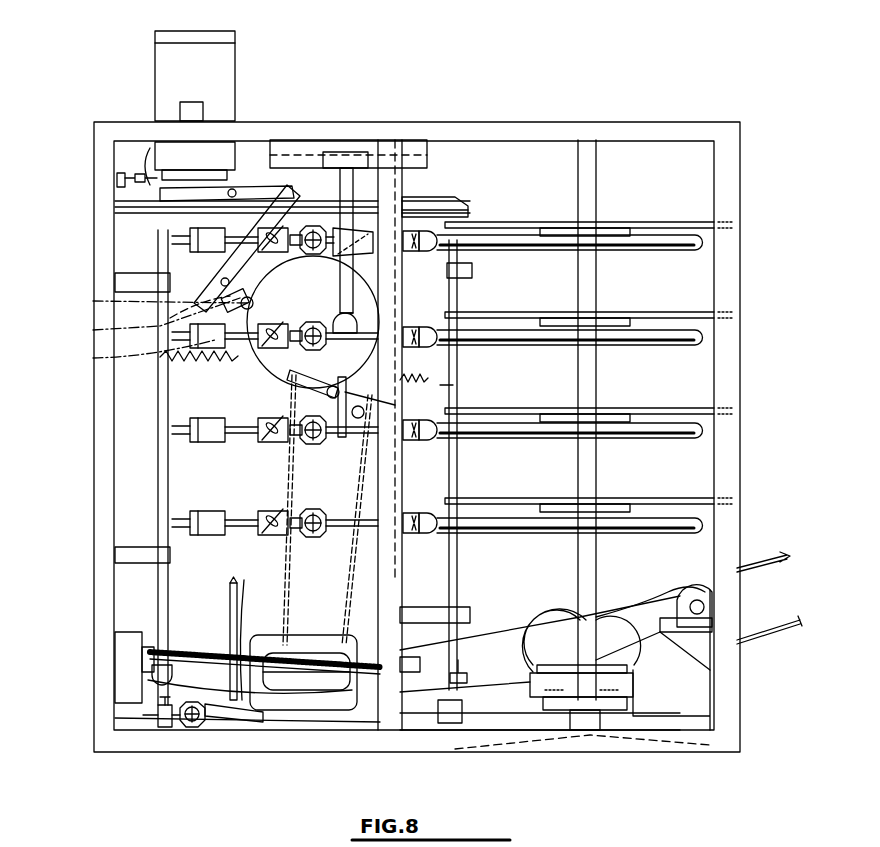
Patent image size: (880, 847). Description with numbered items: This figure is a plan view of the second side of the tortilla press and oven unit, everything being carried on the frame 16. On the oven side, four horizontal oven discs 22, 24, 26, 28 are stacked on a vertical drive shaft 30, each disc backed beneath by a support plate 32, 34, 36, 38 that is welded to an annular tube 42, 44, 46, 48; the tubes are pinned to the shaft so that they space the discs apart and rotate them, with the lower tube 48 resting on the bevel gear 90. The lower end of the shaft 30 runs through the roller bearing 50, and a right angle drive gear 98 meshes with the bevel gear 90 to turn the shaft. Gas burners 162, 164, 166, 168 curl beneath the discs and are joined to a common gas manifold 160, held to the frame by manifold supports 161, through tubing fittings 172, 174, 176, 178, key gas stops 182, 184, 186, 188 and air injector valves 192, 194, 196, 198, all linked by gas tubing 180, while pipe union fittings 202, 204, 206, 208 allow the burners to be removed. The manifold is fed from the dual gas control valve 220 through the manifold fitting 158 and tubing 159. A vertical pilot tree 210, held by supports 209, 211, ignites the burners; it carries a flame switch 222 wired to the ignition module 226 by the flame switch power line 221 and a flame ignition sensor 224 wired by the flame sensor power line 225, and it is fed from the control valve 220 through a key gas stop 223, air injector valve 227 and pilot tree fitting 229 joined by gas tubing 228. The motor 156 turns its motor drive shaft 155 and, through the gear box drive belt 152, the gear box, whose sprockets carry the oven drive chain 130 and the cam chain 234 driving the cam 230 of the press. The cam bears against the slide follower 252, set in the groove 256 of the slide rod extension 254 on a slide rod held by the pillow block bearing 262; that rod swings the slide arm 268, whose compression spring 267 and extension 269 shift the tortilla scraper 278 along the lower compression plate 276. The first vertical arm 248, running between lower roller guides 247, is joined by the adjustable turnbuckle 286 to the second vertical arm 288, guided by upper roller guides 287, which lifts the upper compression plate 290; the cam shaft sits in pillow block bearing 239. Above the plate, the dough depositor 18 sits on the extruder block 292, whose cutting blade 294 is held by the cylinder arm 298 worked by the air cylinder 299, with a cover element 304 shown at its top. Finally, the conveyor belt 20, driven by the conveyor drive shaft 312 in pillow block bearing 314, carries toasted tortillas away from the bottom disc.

The frame 16 is at (739, 173).
The dough depositor 18 is at (237, 50).
The hopper cover 304 is at (236, 40).
The extension 269 is at (247, 180).
The extruder block 292 is at (152, 165).
The cylinder arm 298 is at (133, 177).
The air cylinder 299 is at (118, 172).
The lower compression plate 276 is at (116, 198).
The cutting blade 294 is at (116, 211).
The key gas stop 182 is at (295, 190).
The upper compression plate 290 is at (425, 148).
The second vertical arm 288 is at (360, 152).
The pillow block bearing 239 is at (350, 235).
The upper roller guides 287 is at (390, 207).
The tortilla scraper 278 is at (432, 196).
The gas manifold 160 is at (146, 431).
The manifold supports 161 is at (115, 283).
The pillow block bearing 262 is at (194, 275).
The slide rod extension 254 is at (134, 300).
The groove 256 is at (141, 331).
The slide follower 252 is at (129, 364).
The tubing fitting 174 is at (170, 318).
The slide arm 268 is at (257, 262).
The tubing fitting 172 is at (178, 227).
The air injector valve 192 is at (315, 225).
The key gas stop 184 is at (272, 322).
The air injector valve 194 is at (332, 326).
The tubing fitting 176 is at (195, 418).
The key gas stop 186 is at (272, 426).
The air injector valve 196 is at (315, 446).
The gas tubing 180 is at (235, 440).
The tubing fitting 178 is at (222, 510).
The key gas stop 188 is at (276, 512).
The air injector valve 198 is at (315, 538).
The compression spring 267 is at (232, 372).
The adjustable turnbuckle 286 is at (290, 378).
The lower roller guides 247 is at (468, 394).
The cam chain 234 is at (291, 465).
The first vertical arm 248 is at (366, 452).
The pipe union fitting 202 is at (455, 252).
The gas burner 162 is at (661, 252).
The oven disc 22 is at (658, 222).
The support plate 32 is at (540, 229).
The pipe union fitting 204 is at (420, 348).
The cam 230 is at (454, 353).
The gas burner 164 is at (657, 345).
The oven disc 24 is at (690, 312).
The support plate 34 is at (655, 320).
The pipe union fitting 206 is at (420, 442).
The gas burner 166 is at (649, 438).
The oven disc 26 is at (520, 408).
The support plate 36 is at (650, 415).
The pipe union fitting 208 is at (420, 535).
The pilot tree 210 is at (454, 542).
The gas burner 168 is at (672, 535).
The oven disc 28 is at (490, 498).
The support plate 38 is at (650, 505).
The annular tube 46 is at (578, 447).
The vertical drive shaft 30 is at (578, 163).
The annular tube 42 is at (596, 262).
The annular tube 44 is at (596, 378).
The annular tube 48 is at (596, 573).
The support 209 is at (440, 612).
The flame switch 222 is at (464, 270).
The support 211 is at (466, 272).
The ignition module 226 is at (130, 632).
The flame switch power line 221 is at (197, 650).
The manifold fitting 158 is at (173, 675).
The tubing 159 is at (148, 680).
The gear box drive belt 152 is at (235, 582).
The motor drive shaft 155 is at (246, 610).
The motor 156 is at (302, 648).
The dual gas control valve 220 is at (125, 708).
The key gas stop 223 is at (168, 727).
The air injector valve 227 is at (207, 730).
The flame sensor power line 225 is at (214, 700).
The oven drive chain 130 is at (502, 633).
The flame ignition sensor 224 is at (465, 677).
The pilot tree fitting 229 is at (458, 708).
The gas tubing 228 is at (418, 722).
The right angle drive gear 98 is at (598, 677).
The bevel gear 90 is at (613, 692).
The roller bearing 50 is at (588, 743).
The pillow block bearing 314 is at (706, 592).
The conveyor drive shaft 312 is at (705, 607).
The conveyor belt 20 is at (772, 565).